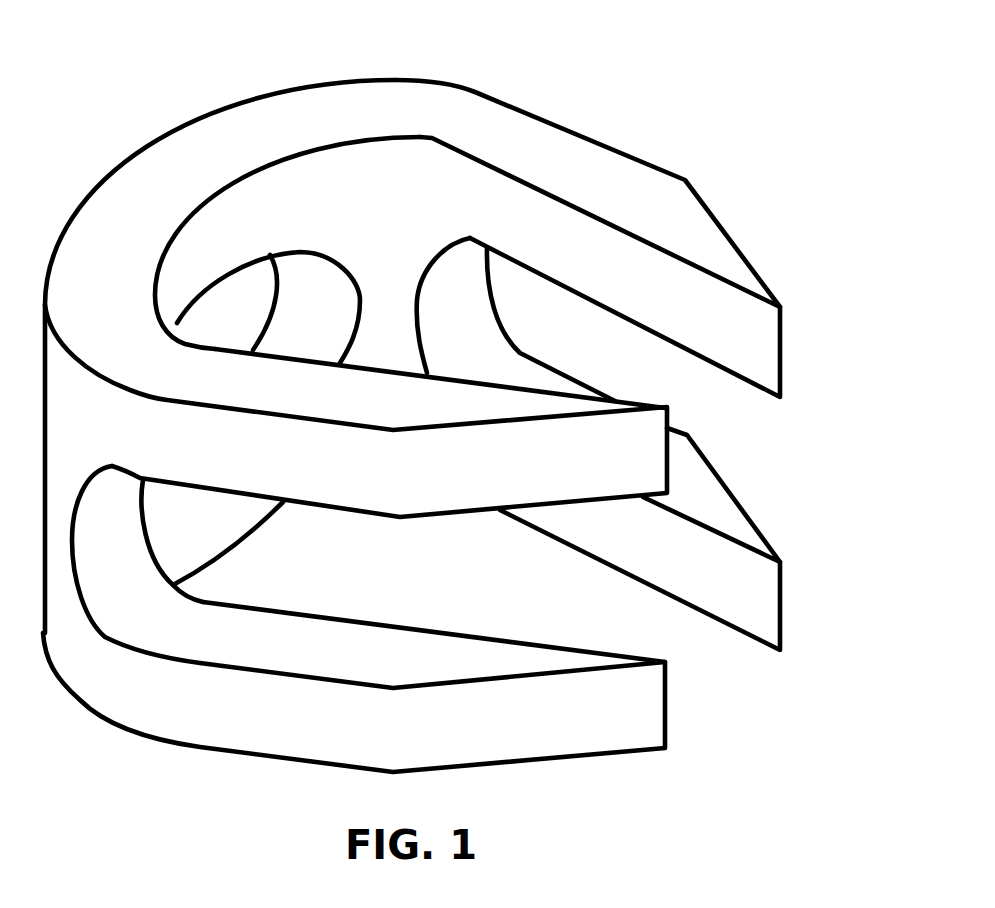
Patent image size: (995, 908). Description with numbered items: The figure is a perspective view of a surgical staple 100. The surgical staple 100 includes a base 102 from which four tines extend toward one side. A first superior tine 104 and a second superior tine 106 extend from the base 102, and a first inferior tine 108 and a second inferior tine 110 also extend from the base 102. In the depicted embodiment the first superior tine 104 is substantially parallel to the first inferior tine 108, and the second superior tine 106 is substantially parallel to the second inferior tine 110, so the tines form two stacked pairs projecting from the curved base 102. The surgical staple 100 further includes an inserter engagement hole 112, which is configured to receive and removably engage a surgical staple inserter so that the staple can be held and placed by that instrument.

The surgical staple 100 is at (441, 403).
The base 102 is at (190, 140).
The first superior tine 104 is at (445, 490).
The second superior tine 106 is at (698, 234).
The first inferior tine 108 is at (572, 742).
The second inferior tine 110 is at (697, 490).
The inserter engagement hole 112 is at (253, 314).